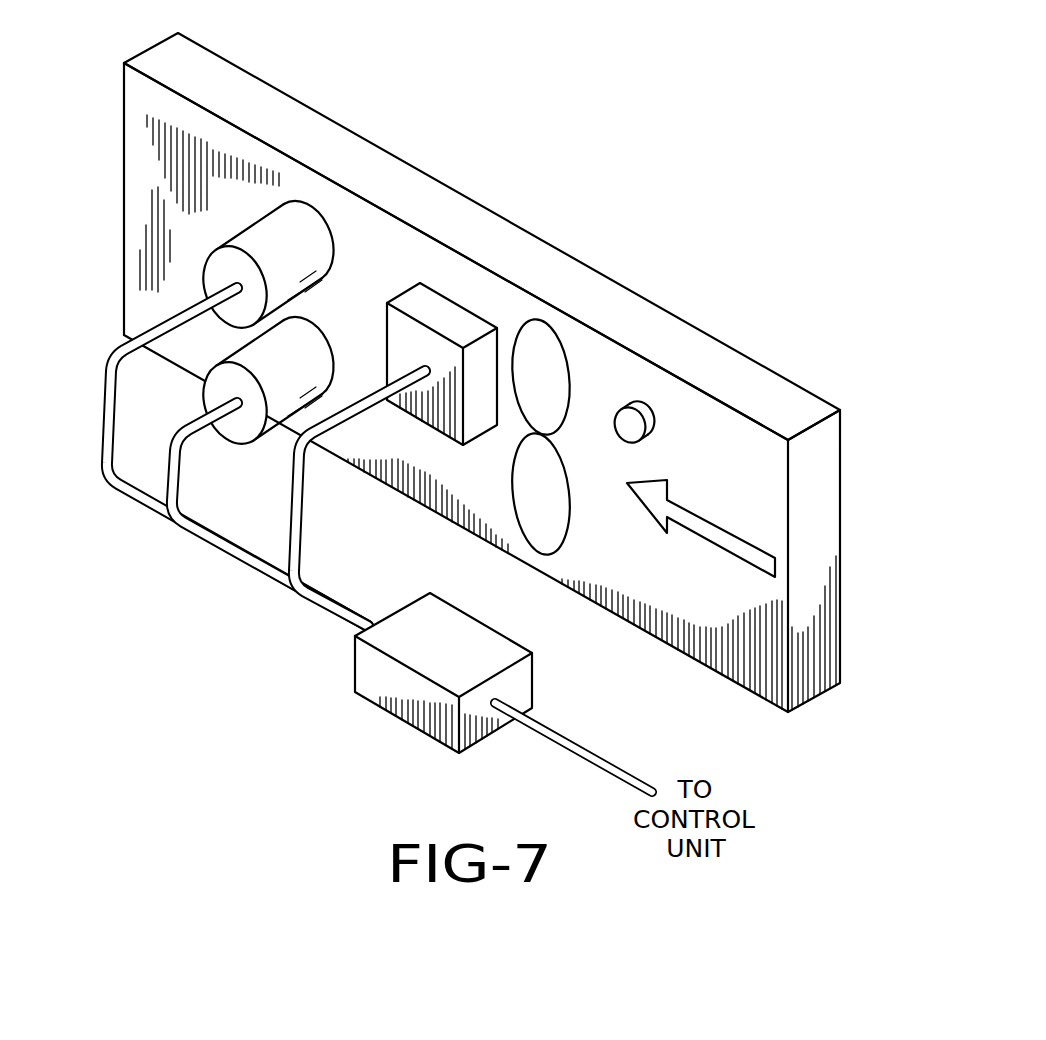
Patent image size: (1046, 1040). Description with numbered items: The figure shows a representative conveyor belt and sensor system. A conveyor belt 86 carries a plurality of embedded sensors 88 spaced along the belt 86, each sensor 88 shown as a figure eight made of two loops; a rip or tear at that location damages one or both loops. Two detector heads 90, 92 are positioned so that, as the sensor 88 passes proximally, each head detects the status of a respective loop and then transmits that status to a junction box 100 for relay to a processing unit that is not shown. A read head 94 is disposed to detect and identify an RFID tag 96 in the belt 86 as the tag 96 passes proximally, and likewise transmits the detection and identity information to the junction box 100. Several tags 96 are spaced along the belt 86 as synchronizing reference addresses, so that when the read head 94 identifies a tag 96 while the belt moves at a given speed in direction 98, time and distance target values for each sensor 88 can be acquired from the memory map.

The conveyor belt 86 is at (392, 154).
The embedded sensor 88 is at (542, 358).
The detector head 90 is at (217, 268).
The detector head 92 is at (218, 390).
The read head 94 is at (446, 322).
The RFID tag 96 is at (630, 423).
The direction of belt movement 98 is at (753, 545).
The junction box 100 is at (380, 666).